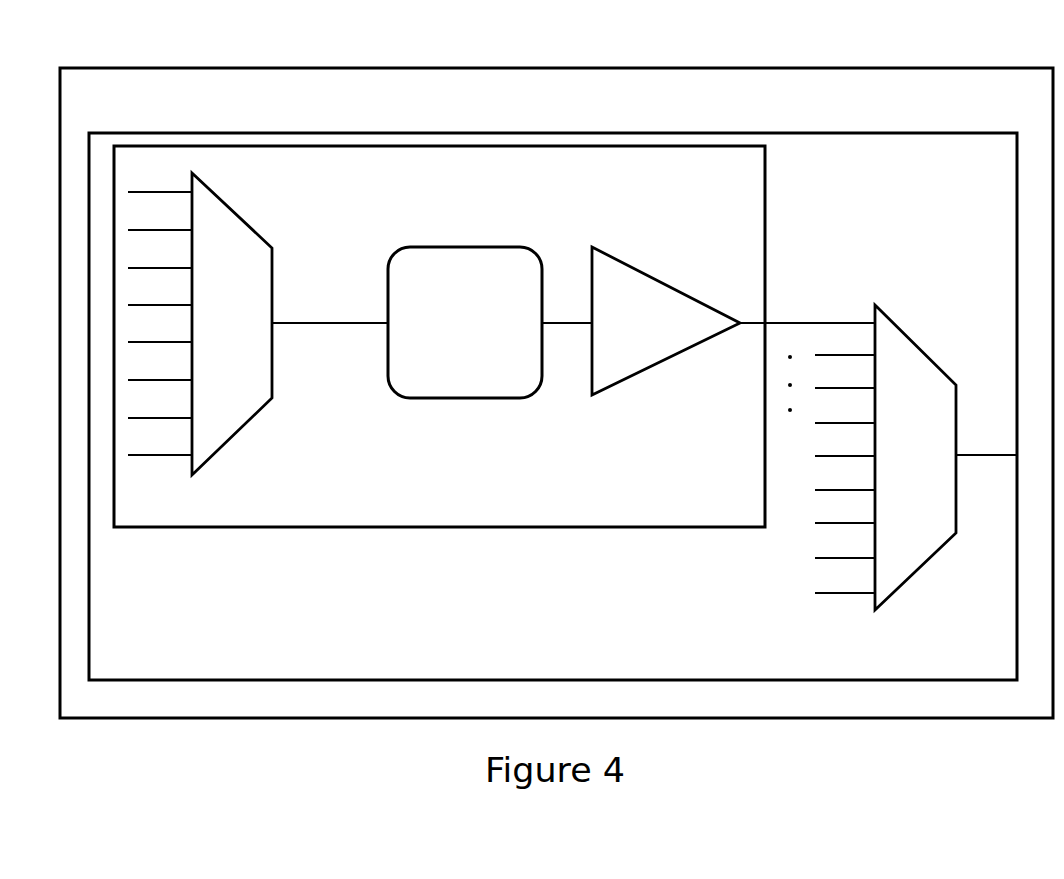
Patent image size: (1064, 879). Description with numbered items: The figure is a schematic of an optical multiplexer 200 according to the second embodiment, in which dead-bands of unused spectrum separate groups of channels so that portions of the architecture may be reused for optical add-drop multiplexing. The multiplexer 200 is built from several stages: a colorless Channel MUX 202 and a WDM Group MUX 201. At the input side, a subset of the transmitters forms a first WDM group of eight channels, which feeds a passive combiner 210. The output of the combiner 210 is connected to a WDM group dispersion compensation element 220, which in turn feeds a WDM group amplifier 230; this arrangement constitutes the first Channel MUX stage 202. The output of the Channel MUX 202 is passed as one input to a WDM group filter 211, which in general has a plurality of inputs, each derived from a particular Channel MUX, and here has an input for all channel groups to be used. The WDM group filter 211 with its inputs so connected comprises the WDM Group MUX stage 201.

The optical multiplexer 200 is at (300, 42).
The WDM group MUX stage 201 is at (933, 106).
The Channel MUX stage 202 is at (517, 119).
The passive combiner 210 is at (248, 334).
The WDM group dispersion compensation element 220 is at (444, 356).
The WDM group amplifier 230 is at (684, 334).
The WDM group filter 211 is at (935, 469).